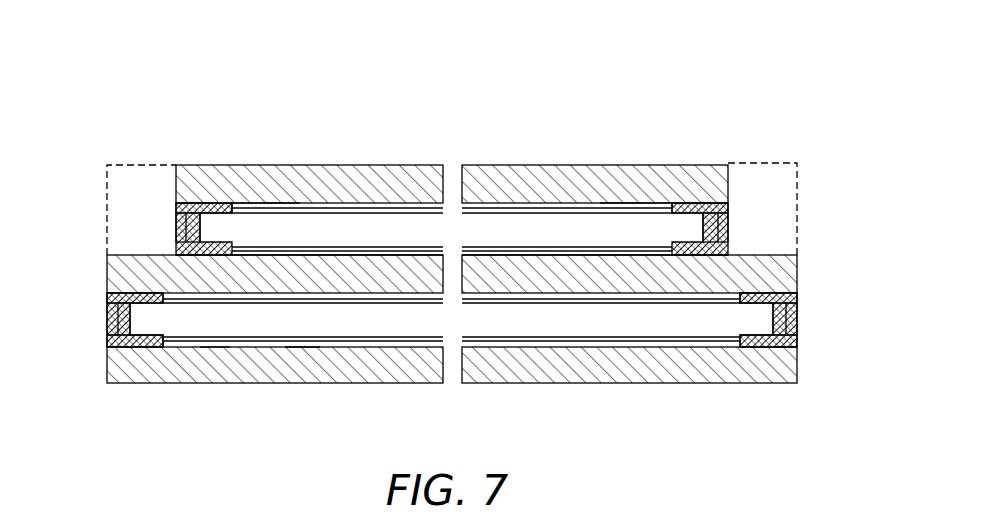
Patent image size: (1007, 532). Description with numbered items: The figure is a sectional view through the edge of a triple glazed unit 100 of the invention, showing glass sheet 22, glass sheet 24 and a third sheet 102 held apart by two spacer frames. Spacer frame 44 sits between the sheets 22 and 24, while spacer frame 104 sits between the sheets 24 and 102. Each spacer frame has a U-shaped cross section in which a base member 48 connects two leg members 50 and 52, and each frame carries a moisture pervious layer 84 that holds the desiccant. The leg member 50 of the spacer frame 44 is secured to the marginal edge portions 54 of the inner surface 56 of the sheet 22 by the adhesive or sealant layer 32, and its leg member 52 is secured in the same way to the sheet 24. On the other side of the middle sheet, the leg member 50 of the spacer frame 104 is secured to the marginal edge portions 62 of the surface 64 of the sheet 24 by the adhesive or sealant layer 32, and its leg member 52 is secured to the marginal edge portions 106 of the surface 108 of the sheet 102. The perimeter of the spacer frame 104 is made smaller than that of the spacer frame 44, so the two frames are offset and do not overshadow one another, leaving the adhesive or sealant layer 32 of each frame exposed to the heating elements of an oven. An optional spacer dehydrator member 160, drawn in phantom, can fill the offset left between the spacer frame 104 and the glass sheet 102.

The glass sheet 22 is at (107, 370).
The glass sheet 24 is at (107, 283).
The adhesive or sealant layer 32 is at (343, 252).
The spacer frame 44 is at (144, 347).
The base member 48 is at (178, 210).
The leg member 50 is at (178, 244).
The leg member 52 is at (205, 216).
The marginal edge portions 54 is at (290, 347).
The inner surface 56 is at (203, 347).
The marginal edge portions 62 is at (183, 272).
The surface 64 is at (117, 255).
The moisture pervious layer 84 is at (178, 222).
The triple glazed unit 100 is at (653, 95).
The sheet 102 is at (715, 163).
The spacer frame 104 is at (205, 204).
The marginal edge portions 106 is at (232, 201).
The surface 108 is at (270, 201).
The spacer dehydrator member 160 is at (130, 163).